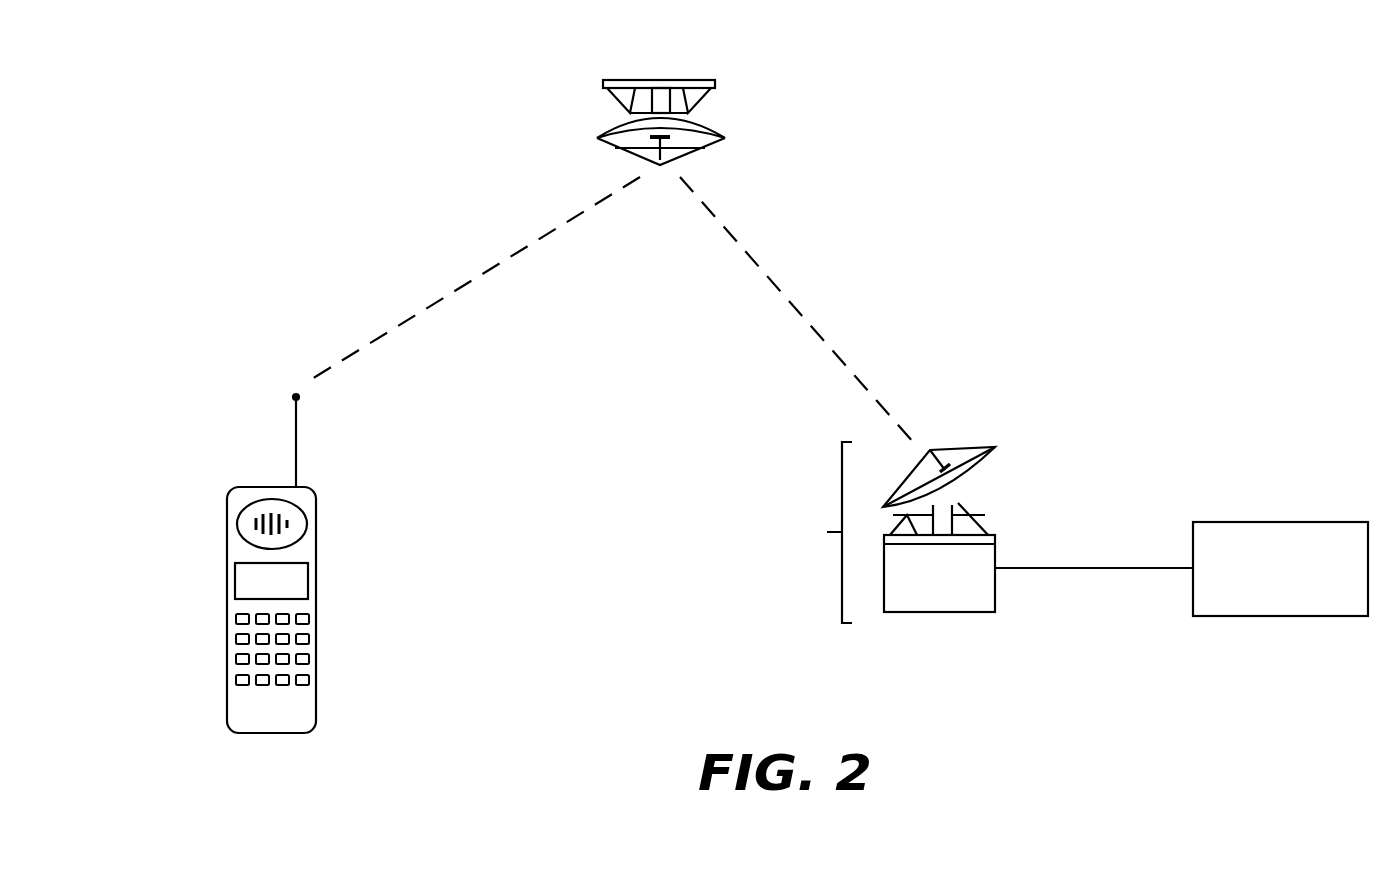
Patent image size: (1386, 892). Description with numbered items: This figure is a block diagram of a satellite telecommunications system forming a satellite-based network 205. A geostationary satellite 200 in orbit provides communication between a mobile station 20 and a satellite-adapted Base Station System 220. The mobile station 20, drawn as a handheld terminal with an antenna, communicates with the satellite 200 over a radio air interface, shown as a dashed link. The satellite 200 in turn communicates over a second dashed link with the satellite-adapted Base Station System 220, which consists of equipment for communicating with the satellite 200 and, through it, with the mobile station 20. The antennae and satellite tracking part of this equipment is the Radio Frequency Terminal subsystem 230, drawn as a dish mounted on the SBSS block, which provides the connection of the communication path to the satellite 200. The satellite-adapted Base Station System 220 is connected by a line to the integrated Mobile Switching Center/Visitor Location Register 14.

The geostationary satellite 200 is at (717, 127).
The satellite-based network 205 is at (1214, 187).
The mobile station 20 is at (228, 617).
The satellite-adapted Base Station System 220 is at (924, 532).
The Radio Frequency Terminal subsystem 230 is at (973, 505).
The integrated Mobile Switching Center/Visitor Location Register 14 is at (1278, 522).